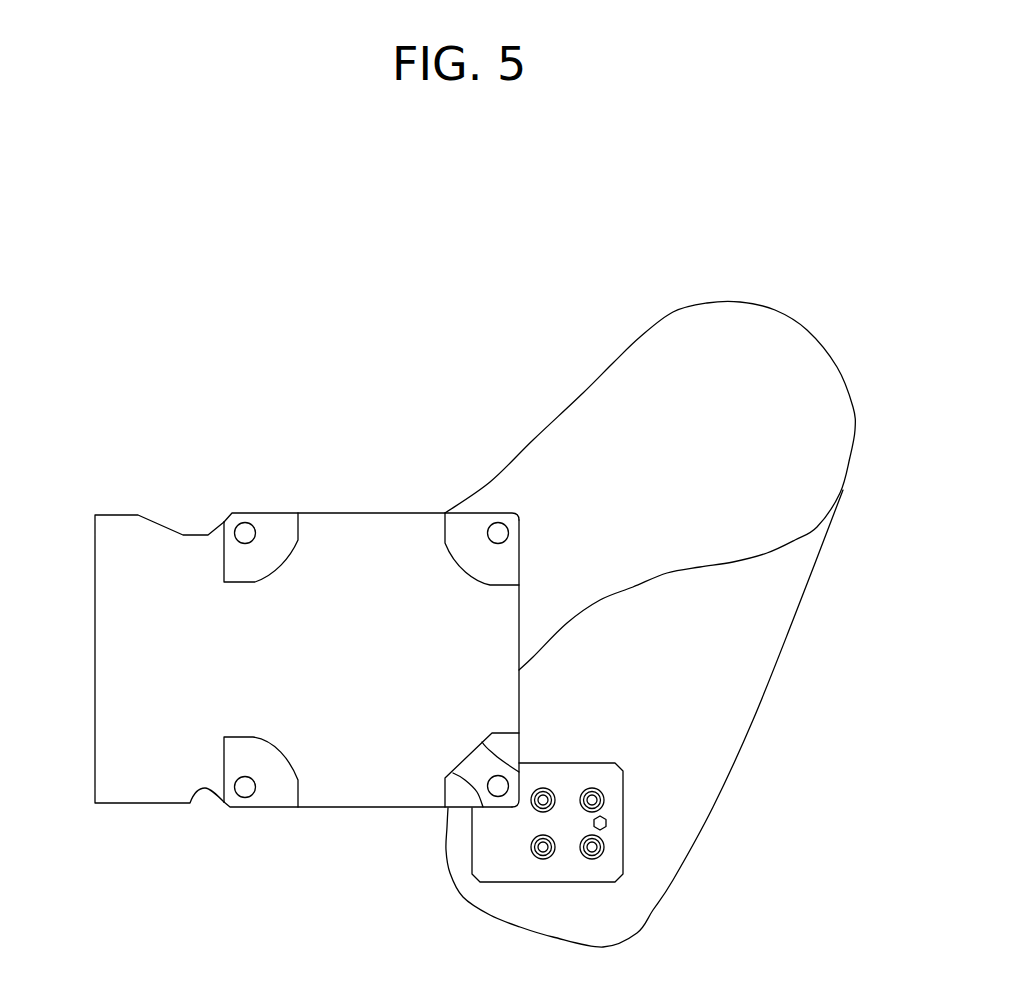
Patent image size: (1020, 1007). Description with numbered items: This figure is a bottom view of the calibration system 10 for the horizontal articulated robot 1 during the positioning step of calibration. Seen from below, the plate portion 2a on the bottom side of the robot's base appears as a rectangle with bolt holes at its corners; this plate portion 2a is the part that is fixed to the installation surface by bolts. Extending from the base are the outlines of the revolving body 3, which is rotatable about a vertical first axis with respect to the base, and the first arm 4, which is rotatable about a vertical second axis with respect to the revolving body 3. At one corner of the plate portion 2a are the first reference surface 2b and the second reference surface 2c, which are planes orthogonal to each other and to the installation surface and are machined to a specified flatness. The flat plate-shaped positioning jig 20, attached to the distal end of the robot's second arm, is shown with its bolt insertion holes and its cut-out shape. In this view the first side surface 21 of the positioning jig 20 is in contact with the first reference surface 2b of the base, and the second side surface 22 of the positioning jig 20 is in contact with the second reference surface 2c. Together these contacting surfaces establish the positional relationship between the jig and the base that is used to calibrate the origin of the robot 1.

The calibration system 10 is at (348, 252).
The horizontal articulated robot 1 is at (421, 587).
The plate portion 2a is at (316, 495).
The first reference surface 2b is at (498, 808).
The second reference surface 2c is at (519, 783).
The revolving body 3 is at (657, 320).
The first arm 4 is at (798, 612).
The positioning jig 20 is at (543, 900).
The first side surface 21 is at (453, 773).
The second side surface 22 is at (482, 742).